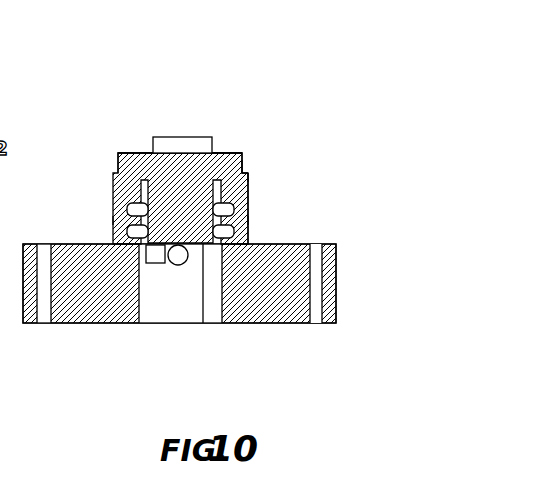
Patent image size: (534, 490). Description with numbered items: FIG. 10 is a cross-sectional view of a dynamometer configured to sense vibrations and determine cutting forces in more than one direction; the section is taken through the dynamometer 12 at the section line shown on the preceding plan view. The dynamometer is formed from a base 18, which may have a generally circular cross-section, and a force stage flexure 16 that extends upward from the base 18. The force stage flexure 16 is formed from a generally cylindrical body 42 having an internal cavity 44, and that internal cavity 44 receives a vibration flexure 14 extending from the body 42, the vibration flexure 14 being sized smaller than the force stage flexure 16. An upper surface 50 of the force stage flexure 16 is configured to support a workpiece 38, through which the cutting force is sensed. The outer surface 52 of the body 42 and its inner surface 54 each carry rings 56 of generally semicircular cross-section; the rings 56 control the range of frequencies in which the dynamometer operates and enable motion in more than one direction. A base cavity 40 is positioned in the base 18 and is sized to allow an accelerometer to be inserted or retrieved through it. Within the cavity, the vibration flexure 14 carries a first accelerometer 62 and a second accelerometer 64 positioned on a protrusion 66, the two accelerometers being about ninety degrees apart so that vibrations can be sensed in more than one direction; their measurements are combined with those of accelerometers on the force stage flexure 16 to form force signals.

The valve assembly 12 is at (100, 178).
The vibration flexure 14 is at (248, 190).
The force stage flexure 16 is at (115, 168).
The base 18 is at (337, 280).
The workpiece 38 is at (193, 137).
The base cavity 40 is at (212, 290).
The body 42 is at (243, 165).
The internal cavity 44 is at (248, 175).
The upper surface 50 is at (222, 153).
The outer surface 52 is at (115, 222).
The inner surface 54 is at (150, 153).
The rings 56 is at (113, 207).
The first accelerometer 62 is at (177, 265).
The second accelerometer 64 is at (157, 263).
The protrusion 66 is at (190, 245).